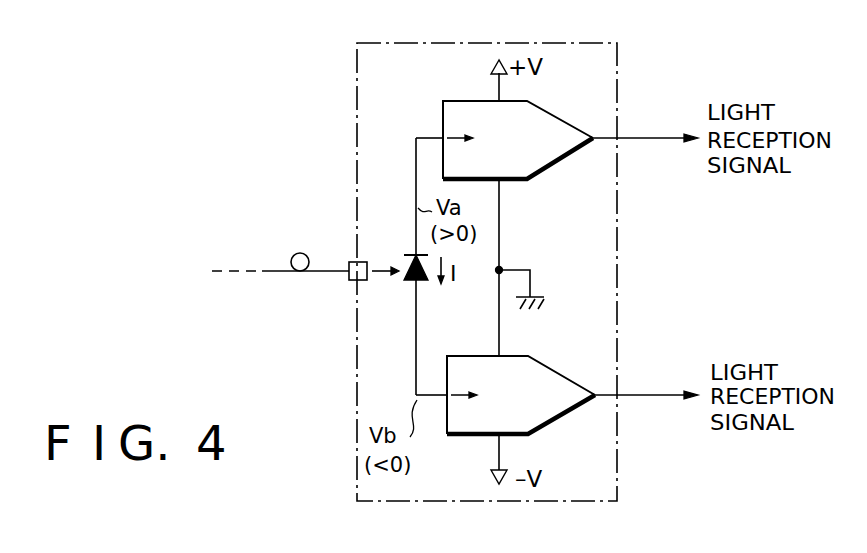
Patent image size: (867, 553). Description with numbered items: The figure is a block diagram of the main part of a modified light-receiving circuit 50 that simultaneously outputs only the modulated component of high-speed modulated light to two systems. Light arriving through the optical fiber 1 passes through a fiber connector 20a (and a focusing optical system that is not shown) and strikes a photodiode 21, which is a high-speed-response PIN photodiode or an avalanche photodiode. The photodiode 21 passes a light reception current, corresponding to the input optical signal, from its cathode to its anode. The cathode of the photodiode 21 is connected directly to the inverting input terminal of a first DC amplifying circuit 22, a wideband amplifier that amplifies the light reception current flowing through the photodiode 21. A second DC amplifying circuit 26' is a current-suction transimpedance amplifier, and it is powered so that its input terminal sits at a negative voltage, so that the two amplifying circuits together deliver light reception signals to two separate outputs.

The optical fiber 1 is at (275, 271).
The fiber connector 20a is at (348, 278).
The photodiode 21 is at (412, 284).
The first DC amplifying circuit 22 is at (557, 117).
The second DC amplifying circuit 26' is at (521, 373).
The light-receiving circuit 50 is at (617, 111).